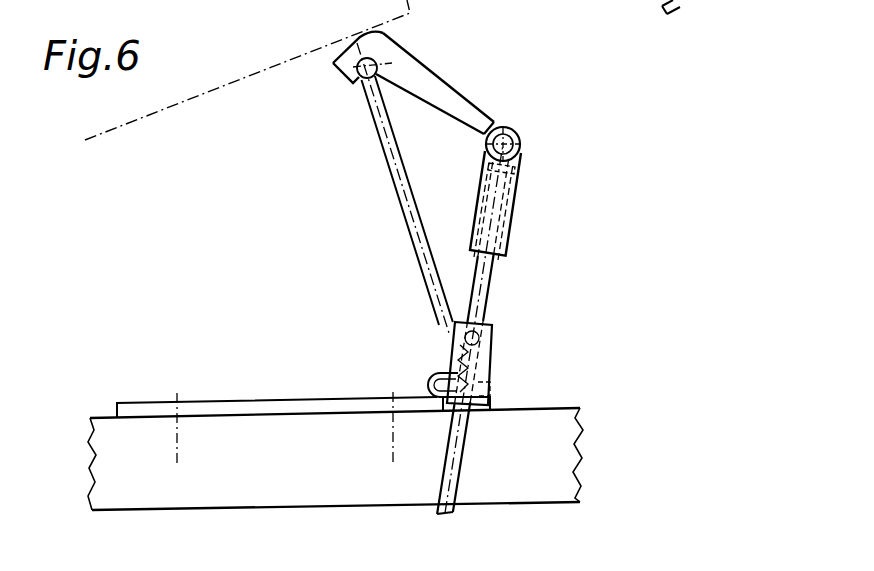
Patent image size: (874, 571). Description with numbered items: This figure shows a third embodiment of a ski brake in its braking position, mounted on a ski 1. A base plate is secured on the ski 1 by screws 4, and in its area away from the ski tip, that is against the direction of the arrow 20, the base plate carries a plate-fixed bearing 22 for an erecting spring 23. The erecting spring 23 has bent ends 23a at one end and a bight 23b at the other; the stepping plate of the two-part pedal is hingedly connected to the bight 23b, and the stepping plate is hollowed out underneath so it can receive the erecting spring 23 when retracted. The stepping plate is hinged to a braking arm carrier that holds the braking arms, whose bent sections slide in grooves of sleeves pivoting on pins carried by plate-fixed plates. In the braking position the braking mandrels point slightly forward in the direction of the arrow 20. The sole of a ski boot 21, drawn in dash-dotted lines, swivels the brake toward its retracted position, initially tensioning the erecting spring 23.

The ski 1 is at (135, 428).
The screws 4 is at (185, 390).
The arrow 20 is at (128, 293).
The sole of a ski boot 21 is at (170, 97).
The plate-fixed bearing 22 is at (442, 372).
The erecting spring 23 is at (448, 110).
The bent ends 23a is at (425, 381).
The bight 23b is at (393, 64).